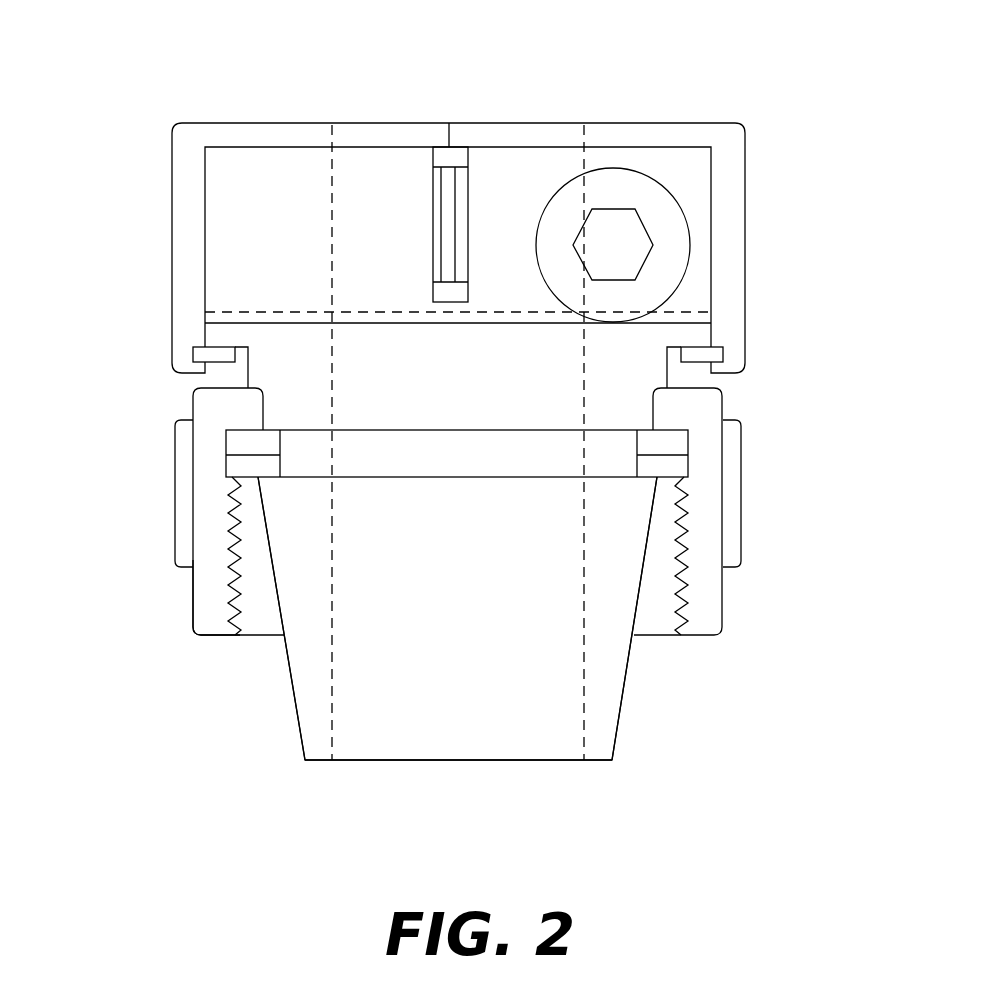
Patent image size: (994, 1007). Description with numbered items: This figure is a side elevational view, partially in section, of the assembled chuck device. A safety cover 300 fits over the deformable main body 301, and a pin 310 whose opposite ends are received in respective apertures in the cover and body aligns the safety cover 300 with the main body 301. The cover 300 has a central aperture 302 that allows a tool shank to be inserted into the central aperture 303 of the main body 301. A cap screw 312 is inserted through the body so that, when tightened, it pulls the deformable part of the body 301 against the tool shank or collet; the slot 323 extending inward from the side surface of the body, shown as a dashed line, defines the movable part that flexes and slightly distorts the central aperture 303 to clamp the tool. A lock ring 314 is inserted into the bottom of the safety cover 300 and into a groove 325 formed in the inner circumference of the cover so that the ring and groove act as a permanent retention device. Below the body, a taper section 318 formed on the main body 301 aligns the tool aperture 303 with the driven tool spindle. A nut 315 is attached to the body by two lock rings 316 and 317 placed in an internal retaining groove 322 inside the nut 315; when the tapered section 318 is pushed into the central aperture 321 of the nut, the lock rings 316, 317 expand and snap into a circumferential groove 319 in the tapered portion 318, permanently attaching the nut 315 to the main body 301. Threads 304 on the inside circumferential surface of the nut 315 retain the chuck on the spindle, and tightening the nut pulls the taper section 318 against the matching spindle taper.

The safety cover 300 is at (172, 176).
The main body 301 is at (620, 725).
The central aperture 302 is at (392, 123).
The central aperture 303 is at (452, 760).
The threads 304 is at (241, 608).
The pin 310 is at (470, 163).
The cap screw 312 is at (673, 197).
The lock ring 314 is at (193, 347).
The nut 315 is at (742, 515).
The lock ring 316 is at (688, 430).
The lock ring 317 is at (688, 457).
The taper section 318 is at (290, 683).
The circumferential groove 319 is at (610, 477).
The central aperture 321 is at (667, 620).
The internal retaining groove 322 is at (226, 455).
The slot 323 is at (228, 312).
The groove 325 is at (195, 363).